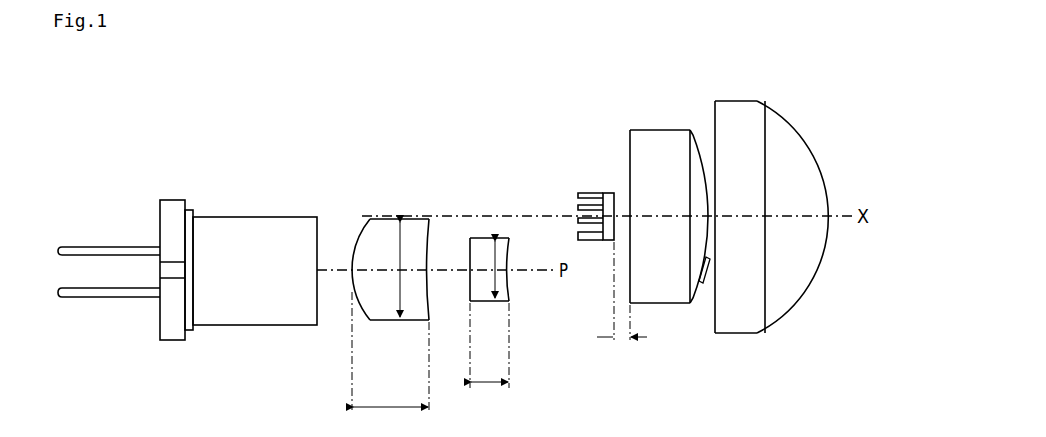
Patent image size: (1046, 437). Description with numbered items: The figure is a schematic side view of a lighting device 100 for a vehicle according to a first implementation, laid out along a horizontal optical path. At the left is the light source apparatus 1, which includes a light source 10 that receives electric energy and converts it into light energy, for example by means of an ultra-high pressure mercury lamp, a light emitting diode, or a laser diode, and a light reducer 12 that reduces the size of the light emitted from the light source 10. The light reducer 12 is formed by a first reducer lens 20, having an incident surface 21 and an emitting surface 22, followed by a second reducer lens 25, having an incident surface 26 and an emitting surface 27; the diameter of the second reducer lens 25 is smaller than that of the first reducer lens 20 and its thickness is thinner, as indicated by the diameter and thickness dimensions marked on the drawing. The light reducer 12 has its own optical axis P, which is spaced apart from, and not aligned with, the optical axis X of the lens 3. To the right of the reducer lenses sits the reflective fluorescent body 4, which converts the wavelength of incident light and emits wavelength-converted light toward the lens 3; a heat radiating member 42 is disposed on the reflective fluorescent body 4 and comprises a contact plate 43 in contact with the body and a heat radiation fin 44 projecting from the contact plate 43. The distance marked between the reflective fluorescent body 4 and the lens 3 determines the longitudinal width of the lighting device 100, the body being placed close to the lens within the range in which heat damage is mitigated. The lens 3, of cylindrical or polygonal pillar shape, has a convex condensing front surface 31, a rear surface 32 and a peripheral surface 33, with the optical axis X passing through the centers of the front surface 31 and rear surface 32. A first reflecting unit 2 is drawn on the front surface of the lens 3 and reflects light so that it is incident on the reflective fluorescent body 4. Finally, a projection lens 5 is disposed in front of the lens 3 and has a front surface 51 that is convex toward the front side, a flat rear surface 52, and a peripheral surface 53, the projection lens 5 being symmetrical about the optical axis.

The lighting device for a vehicle 100 is at (197, 103).
The light source apparatus 1 is at (375, 117).
The light source 10 is at (303, 196).
The light reducer 12 is at (376, 196).
The first reducer lens 20 is at (383, 322).
The incident surface 21 is at (355, 293).
The emitting surface 22 is at (430, 290).
The second reducer lens 25 is at (483, 303).
The incident surface 26 is at (468, 253).
The emitting surface 27 is at (508, 273).
The reflective fluorescent body 4 is at (609, 242).
The heat radiating member 42 is at (603, 135).
The contact plate 43 is at (603, 192).
The heat radiation fin 44 is at (577, 212).
The lens 3 is at (670, 304).
The front surface 31 is at (700, 146).
The rear surface 32 is at (630, 146).
The peripheral surface 33 is at (651, 130).
The first reflecting unit 2 is at (705, 285).
The projection lens 5 is at (752, 245).
The front surface 51 is at (782, 323).
The rear surface 52 is at (715, 101).
The peripheral surface 53 is at (735, 318).